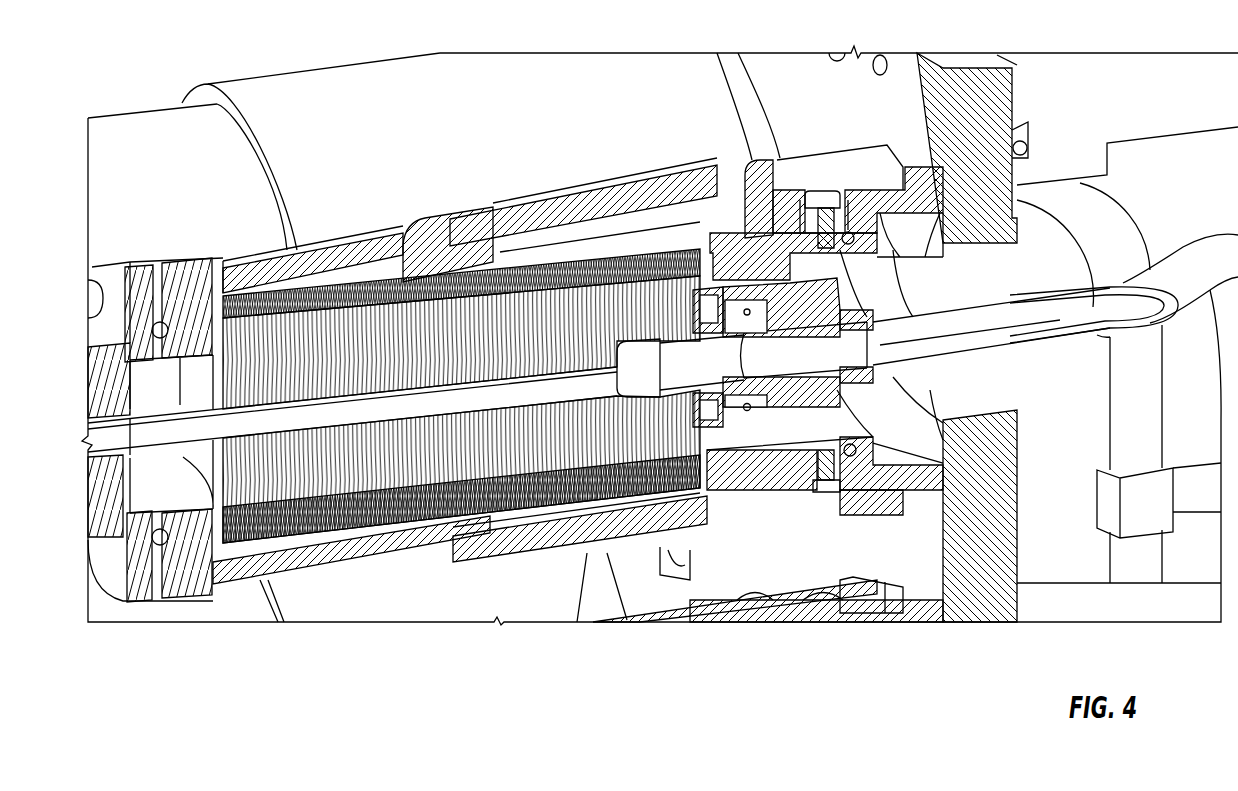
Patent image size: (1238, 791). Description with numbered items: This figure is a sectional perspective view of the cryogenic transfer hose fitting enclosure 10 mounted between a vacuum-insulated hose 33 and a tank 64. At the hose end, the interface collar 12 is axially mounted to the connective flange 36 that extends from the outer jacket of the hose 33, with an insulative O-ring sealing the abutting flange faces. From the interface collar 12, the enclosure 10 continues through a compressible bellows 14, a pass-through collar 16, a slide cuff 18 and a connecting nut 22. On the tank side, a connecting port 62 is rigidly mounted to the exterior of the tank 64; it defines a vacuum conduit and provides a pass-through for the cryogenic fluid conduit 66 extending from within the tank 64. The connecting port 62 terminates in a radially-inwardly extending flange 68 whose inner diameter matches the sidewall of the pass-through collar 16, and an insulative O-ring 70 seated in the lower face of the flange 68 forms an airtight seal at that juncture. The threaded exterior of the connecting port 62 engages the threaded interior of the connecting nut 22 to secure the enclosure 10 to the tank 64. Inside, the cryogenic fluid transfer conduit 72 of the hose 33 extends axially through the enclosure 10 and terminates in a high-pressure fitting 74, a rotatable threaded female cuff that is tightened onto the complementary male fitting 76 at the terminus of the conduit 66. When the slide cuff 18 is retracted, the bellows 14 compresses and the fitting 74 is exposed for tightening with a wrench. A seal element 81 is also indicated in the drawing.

The cryogenic transfer hose fitting enclosure 10 is at (250, 245).
The interface collar 12 is at (343, 557).
The bellows 14 is at (540, 503).
The pass-through collar 16 is at (747, 412).
The slide cuff 18 is at (605, 553).
The connecting nut 22 is at (873, 507).
The vacuum-insulated hose 33 is at (95, 387).
The connective flange 36 is at (143, 583).
The connecting port 62 is at (905, 187).
The tank 64 is at (983, 80).
The cryogenic fluid conduit 66 is at (1088, 313).
The radially-inwardly extending flange 68 is at (848, 231).
The insulative O-ring 70 is at (818, 192).
The cryogenic fluid transfer conduit 72 is at (416, 400).
The high-pressure fitting 74 is at (747, 297).
The male fitting 76 is at (780, 392).
The seal 81 is at (748, 414).